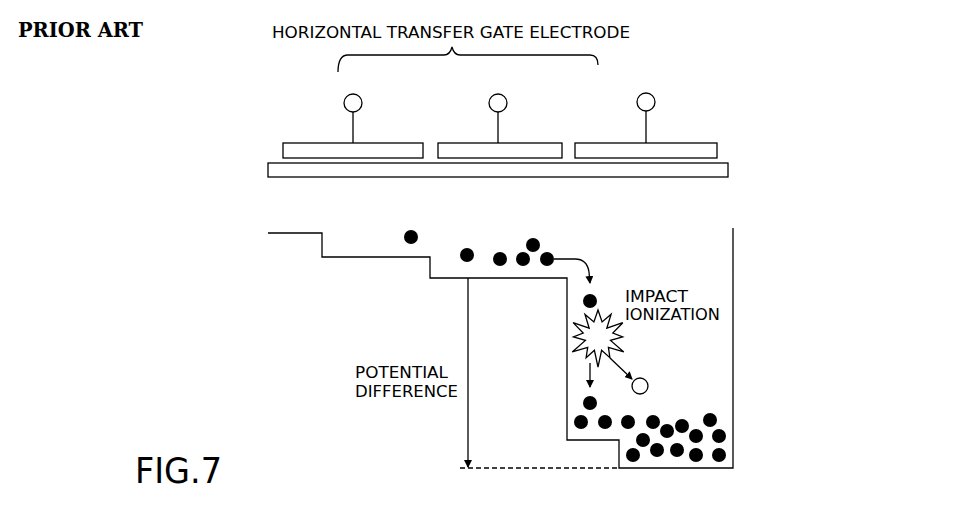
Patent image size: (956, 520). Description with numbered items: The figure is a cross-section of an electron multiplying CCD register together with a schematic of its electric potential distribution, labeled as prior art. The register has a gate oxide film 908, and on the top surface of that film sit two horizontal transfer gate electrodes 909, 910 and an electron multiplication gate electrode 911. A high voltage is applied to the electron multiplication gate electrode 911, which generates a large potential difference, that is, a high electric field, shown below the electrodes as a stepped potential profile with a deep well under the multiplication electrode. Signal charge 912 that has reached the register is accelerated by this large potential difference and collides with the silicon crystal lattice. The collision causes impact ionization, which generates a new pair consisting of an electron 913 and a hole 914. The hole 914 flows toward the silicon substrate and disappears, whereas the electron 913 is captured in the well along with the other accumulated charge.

The gate oxide film 908 is at (268, 167).
The horizontal transfer gate electrode 909 is at (361, 98).
The horizontal transfer gate electrode 910 is at (506, 98).
The electron multiplication gate electrode 911 is at (653, 97).
The signal charge 912 is at (539, 243).
The electron 913 is at (587, 400).
The hole 914 is at (677, 368).